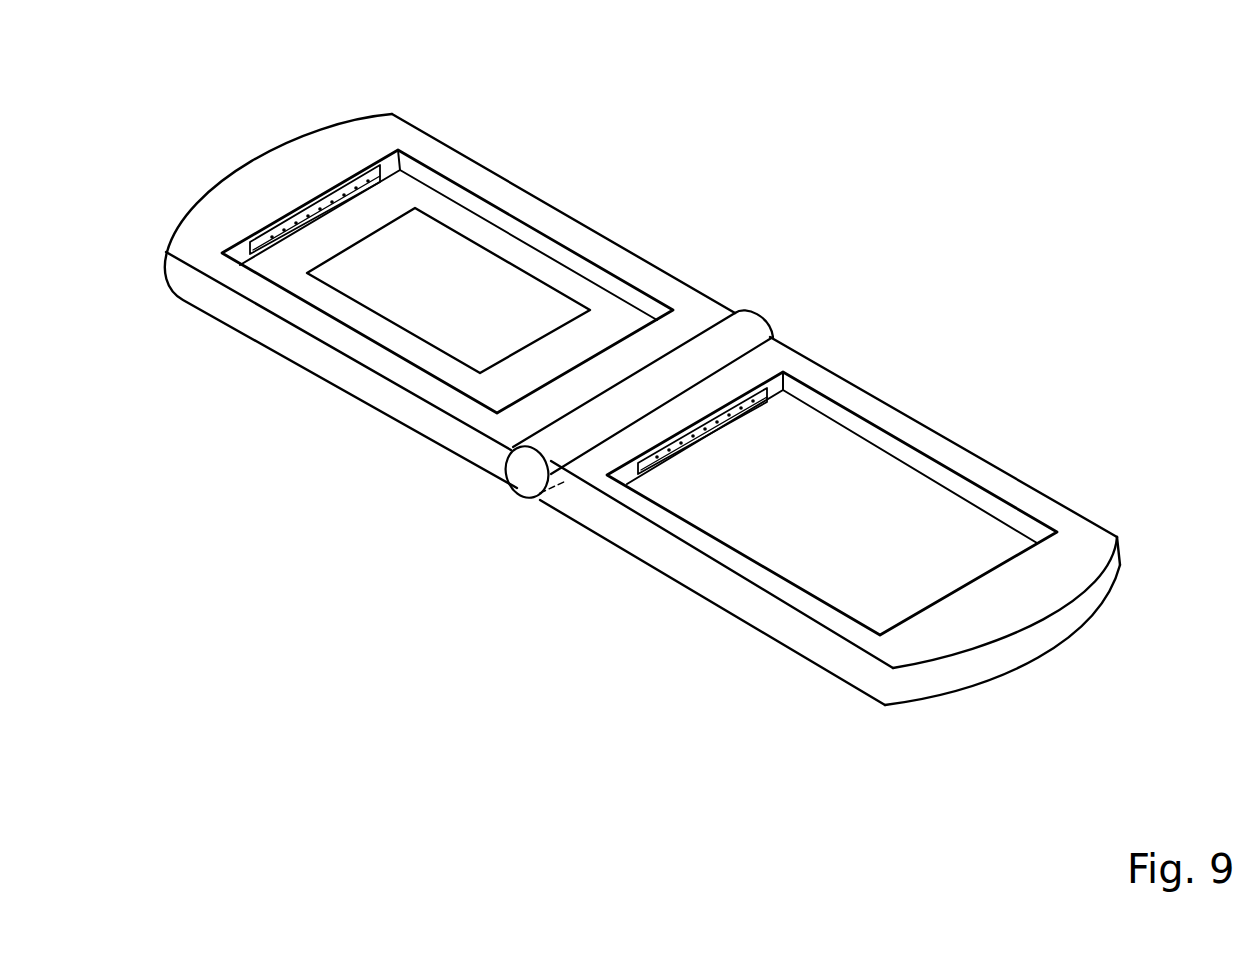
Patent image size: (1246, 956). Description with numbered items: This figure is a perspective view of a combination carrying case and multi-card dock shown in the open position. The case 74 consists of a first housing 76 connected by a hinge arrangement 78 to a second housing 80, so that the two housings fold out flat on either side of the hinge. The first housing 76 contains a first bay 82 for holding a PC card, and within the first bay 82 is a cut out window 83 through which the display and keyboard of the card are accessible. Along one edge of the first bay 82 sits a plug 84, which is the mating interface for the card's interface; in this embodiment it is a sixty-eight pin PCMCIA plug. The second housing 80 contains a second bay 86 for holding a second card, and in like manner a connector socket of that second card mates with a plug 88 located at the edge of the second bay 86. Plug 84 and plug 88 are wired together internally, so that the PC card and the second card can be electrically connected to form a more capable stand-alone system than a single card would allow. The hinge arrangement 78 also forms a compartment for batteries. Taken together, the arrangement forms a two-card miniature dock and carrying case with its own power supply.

The case 74 is at (646, 167).
The first housing 76 is at (653, 263).
The hinge arrangement 78 is at (760, 313).
The second housing 80 is at (942, 435).
The first bay 82 is at (468, 230).
The cut out window 83 is at (530, 307).
The plug 84 is at (377, 163).
The second bay 86 is at (973, 527).
The plug 88 is at (637, 472).